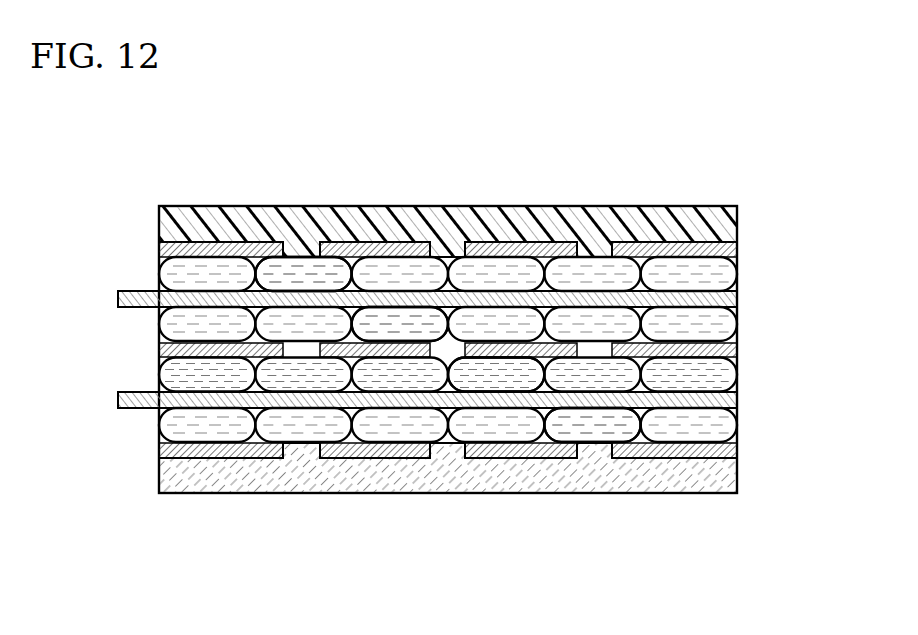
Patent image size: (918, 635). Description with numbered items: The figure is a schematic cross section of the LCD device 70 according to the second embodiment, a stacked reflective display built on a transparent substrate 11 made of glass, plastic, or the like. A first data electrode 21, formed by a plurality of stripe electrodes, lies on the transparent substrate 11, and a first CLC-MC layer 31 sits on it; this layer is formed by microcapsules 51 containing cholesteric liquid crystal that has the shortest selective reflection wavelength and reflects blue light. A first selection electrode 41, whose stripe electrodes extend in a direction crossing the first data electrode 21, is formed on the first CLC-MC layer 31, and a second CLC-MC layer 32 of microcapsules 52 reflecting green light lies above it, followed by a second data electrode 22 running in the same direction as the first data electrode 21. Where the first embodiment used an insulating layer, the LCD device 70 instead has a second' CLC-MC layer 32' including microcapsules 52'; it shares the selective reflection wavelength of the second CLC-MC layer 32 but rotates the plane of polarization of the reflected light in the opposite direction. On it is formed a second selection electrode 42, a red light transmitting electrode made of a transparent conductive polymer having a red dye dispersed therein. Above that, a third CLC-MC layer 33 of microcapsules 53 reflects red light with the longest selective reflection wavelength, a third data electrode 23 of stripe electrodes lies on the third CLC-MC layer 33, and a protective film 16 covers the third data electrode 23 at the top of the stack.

The transparent substrate 11 is at (212, 481).
The protective film 16 is at (220, 206).
The first data electrode 21 is at (167, 450).
The second data electrode 22 is at (167, 350).
The third data electrode 23 is at (167, 250).
The first CLC-MC layer 31 is at (483, 491).
The second CLC-MC layer 32 is at (483, 436).
The second' CLC-MC layer 32' is at (487, 467).
The third CLC-MC layer 33 is at (483, 398).
The first selection electrode 41 is at (125, 399).
The second selection electrode 42 is at (125, 299).
The microcapsule 51 is at (597, 430).
The microcapsule 52 is at (400, 436).
The microcapsule 52' is at (496, 467).
The microcapsule 53 is at (298, 268).
The LCD device 70 is at (464, 177).